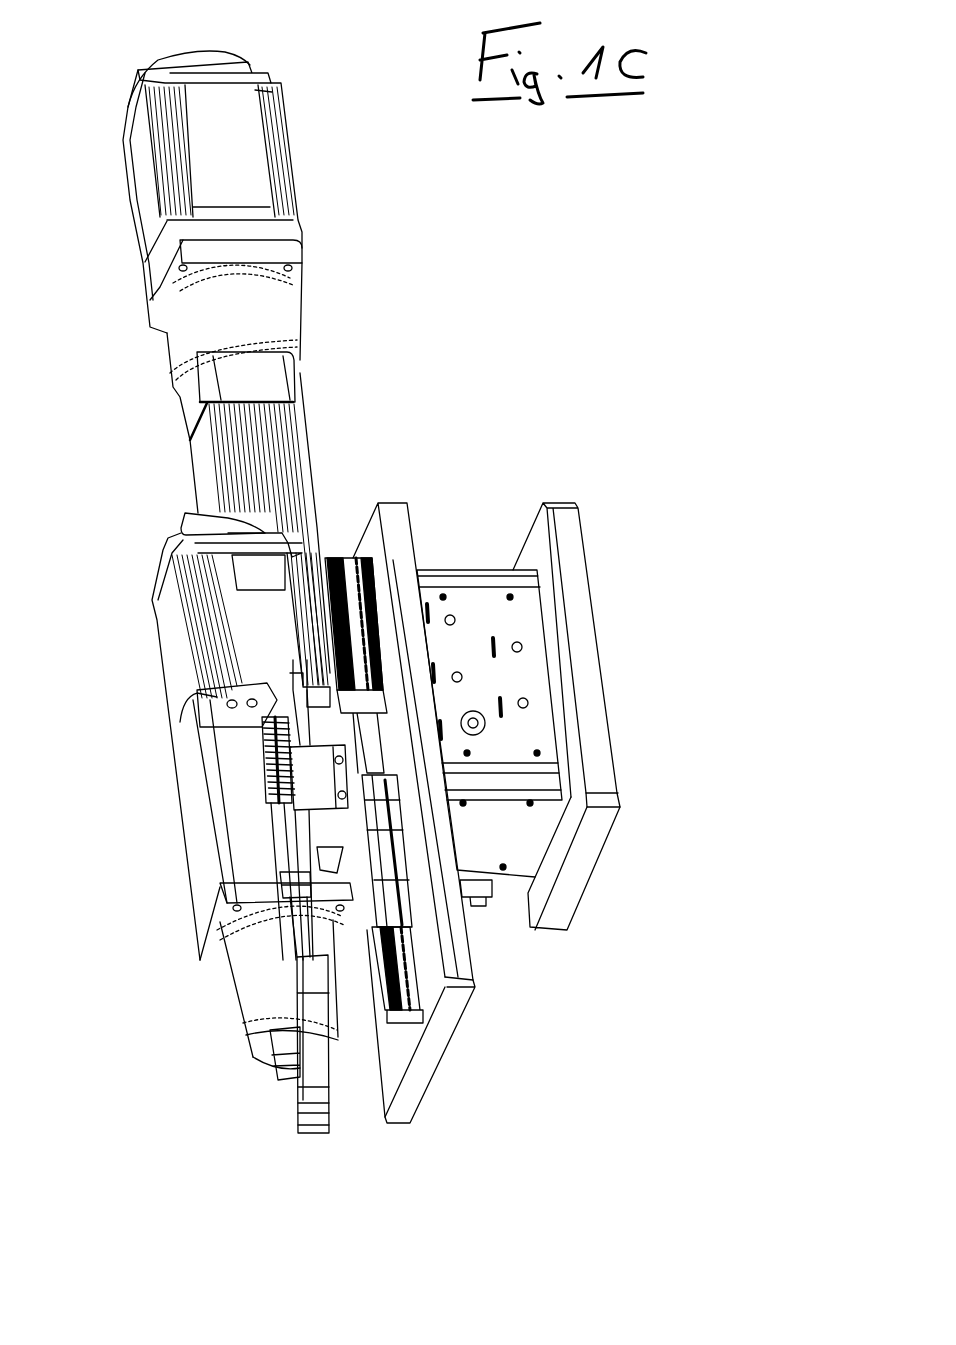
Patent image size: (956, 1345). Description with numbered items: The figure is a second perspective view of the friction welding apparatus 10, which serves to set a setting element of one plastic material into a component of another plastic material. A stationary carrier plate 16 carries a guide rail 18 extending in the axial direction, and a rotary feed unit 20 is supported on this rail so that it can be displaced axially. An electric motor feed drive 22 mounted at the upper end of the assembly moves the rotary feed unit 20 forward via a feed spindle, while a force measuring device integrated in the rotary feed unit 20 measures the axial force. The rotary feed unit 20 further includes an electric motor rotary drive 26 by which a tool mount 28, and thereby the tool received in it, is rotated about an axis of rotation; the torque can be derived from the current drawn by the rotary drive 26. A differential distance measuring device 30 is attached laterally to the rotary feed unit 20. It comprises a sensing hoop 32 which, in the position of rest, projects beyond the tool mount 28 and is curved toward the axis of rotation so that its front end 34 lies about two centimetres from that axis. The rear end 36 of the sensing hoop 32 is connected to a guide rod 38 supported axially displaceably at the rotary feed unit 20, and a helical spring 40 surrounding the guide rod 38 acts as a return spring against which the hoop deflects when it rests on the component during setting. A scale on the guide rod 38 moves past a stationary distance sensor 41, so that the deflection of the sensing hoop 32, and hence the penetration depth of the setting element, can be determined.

The friction welding apparatus 10 is at (483, 366).
The carrier plate 16 is at (398, 1128).
The guide rail 18 is at (403, 1020).
The rotary feed unit 20 is at (200, 838).
The electric motor feed drive 22 is at (242, 173).
The electric motor rotary drive 26 is at (173, 632).
The tool mount 28 is at (273, 1057).
The differential distance measuring device 30 is at (287, 833).
The sensing hoop 32 is at (317, 1063).
The front end 34 is at (313, 1135).
The rear end 36 is at (310, 945).
The guide rod 38 is at (280, 925).
The helical spring 40 is at (265, 748).
The distance sensor 41 is at (325, 785).